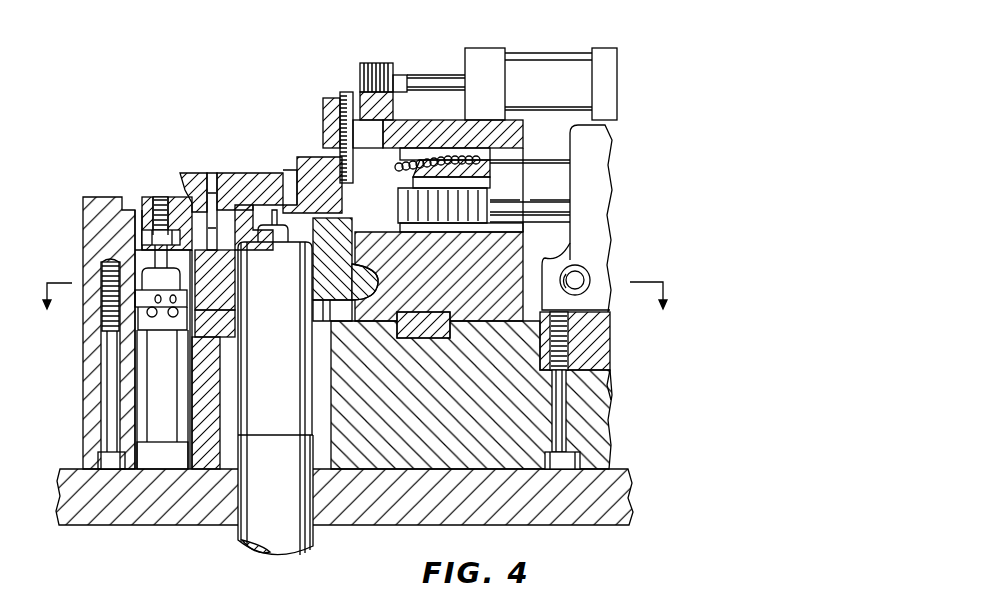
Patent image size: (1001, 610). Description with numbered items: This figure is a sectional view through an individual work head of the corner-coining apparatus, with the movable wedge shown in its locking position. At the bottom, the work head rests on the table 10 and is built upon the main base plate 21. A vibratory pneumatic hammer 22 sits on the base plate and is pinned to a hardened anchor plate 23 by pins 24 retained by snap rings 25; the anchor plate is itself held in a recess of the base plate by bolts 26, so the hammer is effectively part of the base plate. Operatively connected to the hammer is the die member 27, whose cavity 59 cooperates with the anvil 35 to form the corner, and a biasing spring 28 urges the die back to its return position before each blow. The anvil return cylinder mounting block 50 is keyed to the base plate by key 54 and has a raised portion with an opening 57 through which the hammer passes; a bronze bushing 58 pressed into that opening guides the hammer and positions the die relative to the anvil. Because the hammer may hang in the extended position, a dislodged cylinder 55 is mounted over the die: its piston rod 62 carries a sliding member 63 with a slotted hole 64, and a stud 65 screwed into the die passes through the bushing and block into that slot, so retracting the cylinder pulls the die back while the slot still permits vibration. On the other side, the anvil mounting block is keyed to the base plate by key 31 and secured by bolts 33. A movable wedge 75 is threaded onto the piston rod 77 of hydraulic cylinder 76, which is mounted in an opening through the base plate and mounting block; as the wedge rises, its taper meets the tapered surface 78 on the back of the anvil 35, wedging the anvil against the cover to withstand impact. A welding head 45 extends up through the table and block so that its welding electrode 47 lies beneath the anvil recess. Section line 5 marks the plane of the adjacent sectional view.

The section line 5- 5 is at (356, 310).
The table 10 is at (612, 508).
The main base plate 21 is at (395, 470).
The vibratory pneumatic hammer 22 is at (598, 150).
The anchor plate 23 is at (603, 360).
The pins 24 is at (578, 272).
The snap rings 25 is at (592, 280).
The bolts 26 is at (560, 426).
The die member 27 is at (306, 165).
The biasing spring 28 is at (432, 160).
The key 31 is at (234, 331).
The bolts 33 is at (100, 412).
The anvil 35 is at (226, 175).
The welding head 45 is at (243, 536).
The welding electrode 47 is at (274, 228).
The anvil return cylinder mounting block 50 is at (518, 272).
The key 54 is at (420, 338).
The dislodged cylinder 55 is at (494, 52).
The opening 57 is at (521, 153).
The bronze bushing 58 is at (326, 132).
The cavity 59 is at (280, 172).
The piston rod 62 is at (426, 80).
The sliding member 63 is at (375, 63).
The slotted hole 64 is at (345, 97).
The stud 65 is at (368, 134).
The movable wedge 75 is at (143, 198).
The hydraulic cylinder 76 is at (162, 445).
The piston rod 77 is at (164, 262).
The tapered surface 78 is at (172, 194).